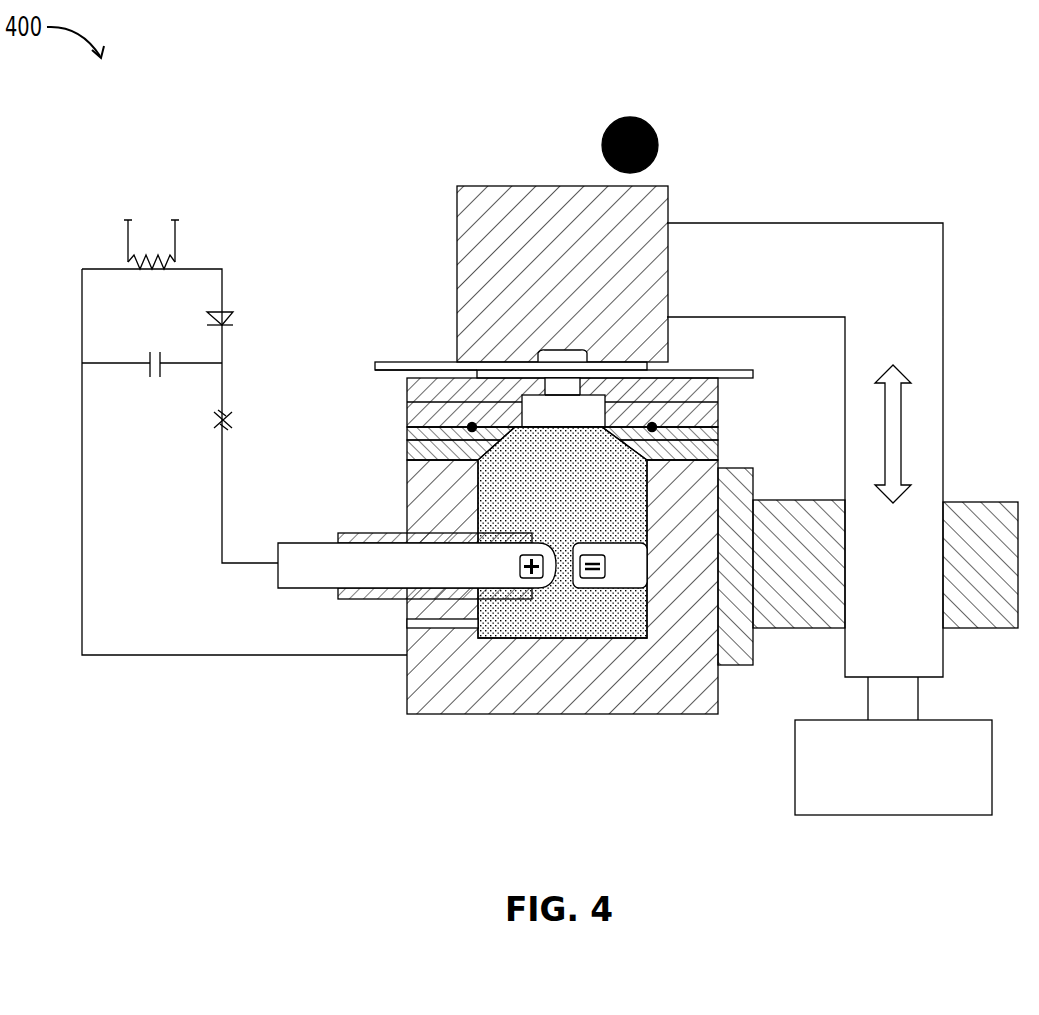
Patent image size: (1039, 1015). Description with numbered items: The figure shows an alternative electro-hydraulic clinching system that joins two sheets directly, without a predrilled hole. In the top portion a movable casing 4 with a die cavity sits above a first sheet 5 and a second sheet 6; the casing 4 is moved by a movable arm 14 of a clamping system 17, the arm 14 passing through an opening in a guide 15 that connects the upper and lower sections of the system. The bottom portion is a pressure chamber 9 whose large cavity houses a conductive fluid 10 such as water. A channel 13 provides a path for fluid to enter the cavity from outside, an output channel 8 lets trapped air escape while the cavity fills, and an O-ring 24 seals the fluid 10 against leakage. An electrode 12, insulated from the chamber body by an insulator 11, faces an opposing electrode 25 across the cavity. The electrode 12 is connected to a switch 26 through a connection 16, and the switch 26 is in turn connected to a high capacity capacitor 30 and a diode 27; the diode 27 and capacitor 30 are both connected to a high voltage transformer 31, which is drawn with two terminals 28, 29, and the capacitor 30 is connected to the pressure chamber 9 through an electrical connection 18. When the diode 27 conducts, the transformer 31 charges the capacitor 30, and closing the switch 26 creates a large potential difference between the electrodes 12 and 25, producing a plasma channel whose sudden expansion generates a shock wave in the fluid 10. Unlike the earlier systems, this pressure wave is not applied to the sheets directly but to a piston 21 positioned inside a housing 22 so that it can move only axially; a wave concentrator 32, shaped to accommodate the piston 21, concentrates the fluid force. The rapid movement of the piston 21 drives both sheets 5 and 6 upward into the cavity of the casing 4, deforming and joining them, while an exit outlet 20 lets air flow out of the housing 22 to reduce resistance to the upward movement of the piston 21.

The movable casing 4 is at (457, 210).
The first sheet 5 is at (408, 360).
The second sheet 6 is at (740, 367).
The output channel 8 is at (407, 446).
The pressure chamber 9 is at (652, 712).
The fluid 10 is at (513, 620).
The insulator 11 is at (393, 533).
The electrode 12 is at (310, 543).
The channel 13 is at (420, 622).
The movable arm 14 is at (716, 317).
The guide 15 is at (965, 502).
The wire 16 is at (222, 470).
The clamping system 17 is at (795, 776).
The electrical connection 18 is at (82, 476).
The exit outlet 20 is at (407, 389).
The piston 21 is at (522, 407).
The housing 22 is at (718, 386).
The O-ring 24 is at (407, 420).
The opposing electrode 25 is at (598, 553).
The switch 26 is at (231, 425).
The diode 27 is at (231, 312).
The terminal 28 is at (176, 241).
The terminal 29 is at (127, 229).
The capacitor 30 is at (152, 380).
The high voltage transformer 31 is at (150, 270).
The wave concentrator 32 is at (718, 448).